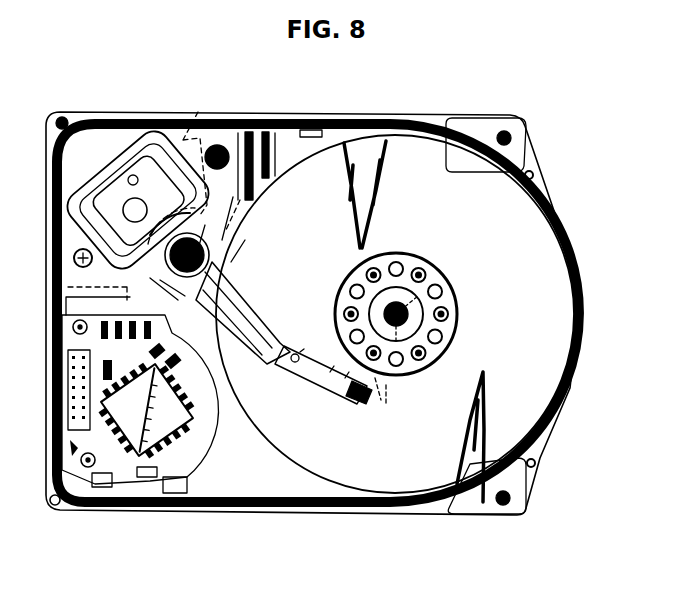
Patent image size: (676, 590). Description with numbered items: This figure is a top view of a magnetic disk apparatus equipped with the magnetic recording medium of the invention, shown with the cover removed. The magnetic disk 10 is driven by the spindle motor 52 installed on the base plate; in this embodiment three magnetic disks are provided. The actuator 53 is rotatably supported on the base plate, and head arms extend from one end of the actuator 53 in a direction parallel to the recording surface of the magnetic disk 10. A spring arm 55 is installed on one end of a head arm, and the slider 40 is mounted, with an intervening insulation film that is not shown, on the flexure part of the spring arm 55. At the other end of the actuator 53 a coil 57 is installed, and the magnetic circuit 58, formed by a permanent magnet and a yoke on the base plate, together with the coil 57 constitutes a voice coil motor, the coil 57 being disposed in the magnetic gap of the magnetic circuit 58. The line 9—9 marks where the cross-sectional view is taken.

The magnetic disk 10 is at (521, 413).
The spindle motor 52 is at (418, 384).
The actuator 53 is at (248, 278).
The spring arm 55 is at (324, 378).
The slider 40 is at (361, 400).
The coil 57 is at (122, 145).
The magnetic circuit 58 is at (198, 112).
The section line 9— 9 is at (44, 257).